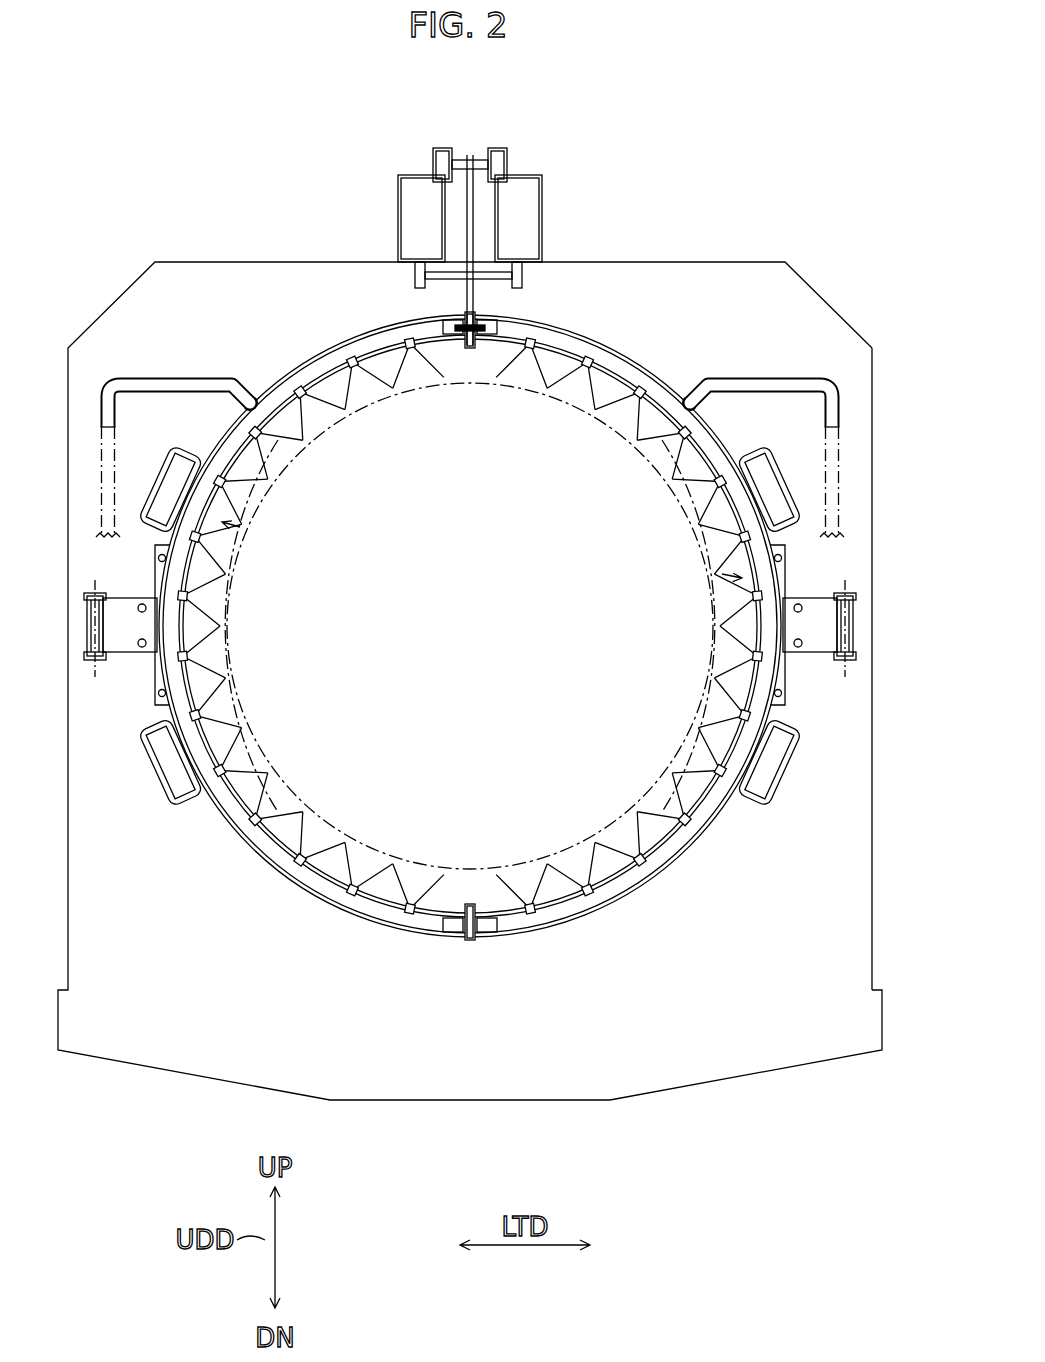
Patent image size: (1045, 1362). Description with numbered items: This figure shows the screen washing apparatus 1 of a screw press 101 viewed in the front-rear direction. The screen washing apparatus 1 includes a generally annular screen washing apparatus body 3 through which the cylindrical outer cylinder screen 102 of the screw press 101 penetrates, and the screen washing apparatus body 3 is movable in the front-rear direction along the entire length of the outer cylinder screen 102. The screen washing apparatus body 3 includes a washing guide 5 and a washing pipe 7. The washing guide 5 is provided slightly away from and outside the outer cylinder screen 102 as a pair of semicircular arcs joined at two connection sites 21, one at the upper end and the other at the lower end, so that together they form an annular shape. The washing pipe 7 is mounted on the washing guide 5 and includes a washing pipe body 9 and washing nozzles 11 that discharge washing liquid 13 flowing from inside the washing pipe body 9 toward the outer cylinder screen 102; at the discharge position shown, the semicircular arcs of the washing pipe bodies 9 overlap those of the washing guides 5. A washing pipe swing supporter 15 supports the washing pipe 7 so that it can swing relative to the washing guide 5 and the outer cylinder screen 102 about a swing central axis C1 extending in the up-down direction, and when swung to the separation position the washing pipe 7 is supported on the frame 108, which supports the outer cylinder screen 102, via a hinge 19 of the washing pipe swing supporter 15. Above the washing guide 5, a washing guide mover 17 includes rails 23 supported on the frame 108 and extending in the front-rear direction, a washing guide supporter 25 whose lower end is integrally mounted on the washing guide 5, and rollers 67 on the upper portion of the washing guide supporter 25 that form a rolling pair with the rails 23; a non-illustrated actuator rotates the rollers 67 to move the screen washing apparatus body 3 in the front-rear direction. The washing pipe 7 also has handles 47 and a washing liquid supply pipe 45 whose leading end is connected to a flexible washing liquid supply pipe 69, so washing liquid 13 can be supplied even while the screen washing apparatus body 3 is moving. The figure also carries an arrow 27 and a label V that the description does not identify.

The screen washing apparatus 1 is at (470, 619).
The screen washing apparatus body 3 is at (470, 570).
The washing guide 5 is at (605, 256).
The washing pipe 7 is at (665, 315).
The washing pipe body 9 is at (248, 398).
The washing nozzles 11 is at (413, 354).
The washing liquid 13 is at (469, 625).
The washing pipe swing supporter 15 is at (468, 615).
The washing guide mover 17 is at (469, 201).
The hinge 19 is at (98, 620).
The connection sites 21 is at (495, 1005).
The rails 23 is at (398, 200).
The washing guide supporter 25 is at (474, 200).
The circumferential direction 27 is at (240, 527).
The washing liquid supply pipe 45 is at (168, 377).
The handles 47 is at (165, 775).
The rollers 67 is at (440, 148).
The flexible washing liquid supply pipe 69 is at (100, 490).
The screw press 101 is at (745, 262).
The outer cylinder screen 102 is at (600, 452).
The frame 108 is at (873, 432).
The swing central axis C1 is at (95, 668).
The virtual region V is at (256, 572).